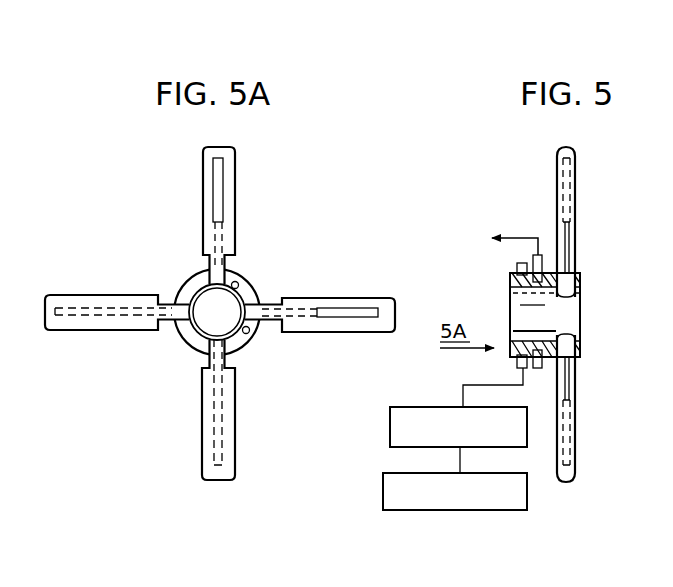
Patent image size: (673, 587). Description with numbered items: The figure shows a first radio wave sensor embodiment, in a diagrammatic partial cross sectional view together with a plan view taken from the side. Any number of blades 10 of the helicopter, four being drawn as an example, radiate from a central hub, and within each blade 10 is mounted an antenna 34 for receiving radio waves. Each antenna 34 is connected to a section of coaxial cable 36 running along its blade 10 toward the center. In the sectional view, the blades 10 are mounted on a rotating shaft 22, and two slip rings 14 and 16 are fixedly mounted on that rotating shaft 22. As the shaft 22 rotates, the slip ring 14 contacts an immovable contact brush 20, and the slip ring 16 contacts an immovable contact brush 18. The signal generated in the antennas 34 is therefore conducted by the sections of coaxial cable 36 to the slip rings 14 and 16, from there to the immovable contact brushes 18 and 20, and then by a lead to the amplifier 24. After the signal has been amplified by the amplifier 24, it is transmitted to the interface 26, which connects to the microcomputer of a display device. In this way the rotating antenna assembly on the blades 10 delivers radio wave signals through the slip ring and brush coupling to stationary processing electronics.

In FIG. 5A, the blade 10 is at (203, 168).
In FIG. 5, the blade 10 is at (578, 172).
In FIG. 5, the slip ring 14 is at (517, 272).
In FIG. 5, the slip ring 16 is at (542, 282).
In FIG. 5, the contact brush 18 is at (540, 255).
In FIG. 5, the contact brush 20 is at (508, 387).
In FIG. 5, the rotating shaft 22 is at (570, 317).
In FIG. 5, the amplifier 24 is at (390, 428).
In FIG. 5, the interface 26 is at (424, 510).
In FIG. 5A, the antenna 34 is at (222, 190).
In FIG. 5, the antenna 34 is at (560, 182).
In FIG. 5A, the coaxial cable 36 is at (222, 248).
In FIG. 5, the coaxial cable 36 is at (569, 242).